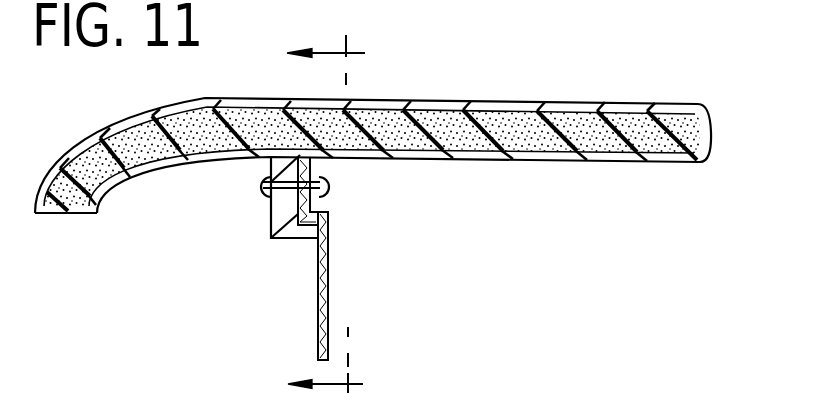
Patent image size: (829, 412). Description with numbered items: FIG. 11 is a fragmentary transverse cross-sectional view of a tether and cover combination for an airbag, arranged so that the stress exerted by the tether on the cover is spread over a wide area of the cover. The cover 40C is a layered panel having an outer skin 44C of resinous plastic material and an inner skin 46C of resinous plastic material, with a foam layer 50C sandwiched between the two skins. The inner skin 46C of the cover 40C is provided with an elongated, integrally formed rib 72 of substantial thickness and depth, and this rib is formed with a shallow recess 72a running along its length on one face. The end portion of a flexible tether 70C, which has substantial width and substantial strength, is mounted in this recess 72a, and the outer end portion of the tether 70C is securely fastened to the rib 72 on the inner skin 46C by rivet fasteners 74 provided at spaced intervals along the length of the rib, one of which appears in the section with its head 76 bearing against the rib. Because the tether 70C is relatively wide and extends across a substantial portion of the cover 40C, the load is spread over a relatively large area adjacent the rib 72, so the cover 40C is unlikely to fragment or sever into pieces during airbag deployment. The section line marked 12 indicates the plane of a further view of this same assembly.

The section line 12- 12 is at (335, 222).
The cover 40C is at (492, 97).
The outer skin 44C is at (630, 102).
The inner skin 46C is at (631, 163).
The foam layer 50C is at (698, 127).
The flexible tether 70C is at (328, 283).
The rib 72 is at (276, 216).
The recess 72a is at (322, 214).
The rivet fasteners 74 is at (260, 187).
The rivet head 76 is at (322, 173).